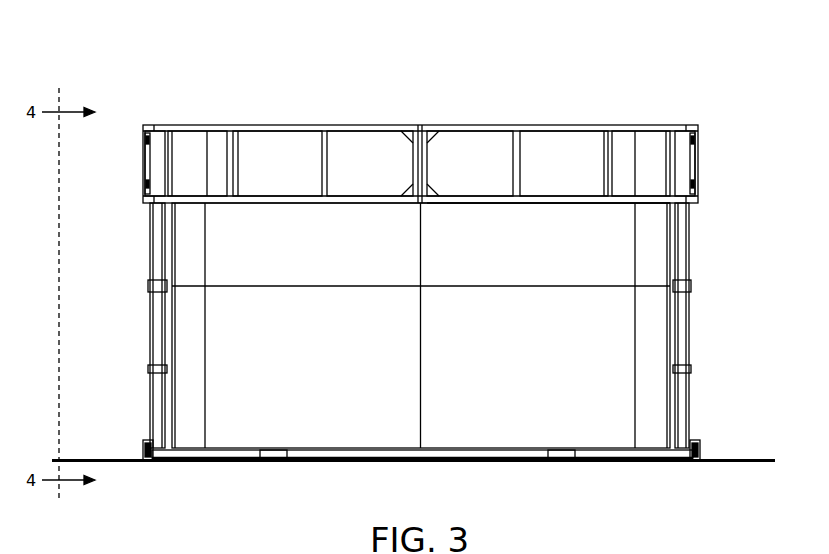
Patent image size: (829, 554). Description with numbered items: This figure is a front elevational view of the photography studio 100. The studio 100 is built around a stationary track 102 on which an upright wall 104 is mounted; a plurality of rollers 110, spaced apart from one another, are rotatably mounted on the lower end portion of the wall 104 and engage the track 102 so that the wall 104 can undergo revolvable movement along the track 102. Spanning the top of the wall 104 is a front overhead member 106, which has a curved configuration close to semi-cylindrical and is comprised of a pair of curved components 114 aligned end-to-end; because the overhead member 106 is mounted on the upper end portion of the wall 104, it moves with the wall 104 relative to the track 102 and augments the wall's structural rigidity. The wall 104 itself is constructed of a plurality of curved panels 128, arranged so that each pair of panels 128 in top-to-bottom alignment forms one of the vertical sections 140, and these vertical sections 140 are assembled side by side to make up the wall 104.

The photography studio 100 is at (413, 267).
The stationary track 102 is at (650, 457).
The upright wall 104 is at (698, 235).
The front overhead member 106 is at (540, 212).
The rollers 110 is at (145, 445).
The curved components 114 is at (264, 118).
The curved panels 128 is at (712, 350).
The vertical sections 140 is at (368, 458).